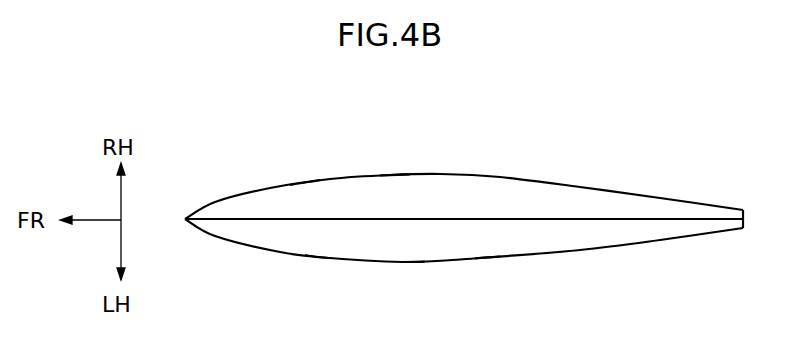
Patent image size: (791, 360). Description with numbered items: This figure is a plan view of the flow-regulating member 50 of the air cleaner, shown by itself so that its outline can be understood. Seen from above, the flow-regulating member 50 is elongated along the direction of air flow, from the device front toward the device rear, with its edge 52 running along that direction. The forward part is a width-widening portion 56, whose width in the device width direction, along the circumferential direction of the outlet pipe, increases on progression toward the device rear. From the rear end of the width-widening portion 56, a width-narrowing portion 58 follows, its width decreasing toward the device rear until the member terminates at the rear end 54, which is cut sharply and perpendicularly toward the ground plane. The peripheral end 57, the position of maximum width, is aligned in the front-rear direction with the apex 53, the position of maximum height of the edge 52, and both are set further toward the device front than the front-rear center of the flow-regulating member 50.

The flow-regulating member 50 is at (623, 160).
The edge 52 is at (311, 217).
The apex 53 is at (408, 217).
The rear end 54 is at (743, 210).
The width-widening portion 56 is at (317, 260).
The peripheral end 57 is at (413, 262).
The width-narrowing portion 58 is at (485, 259).